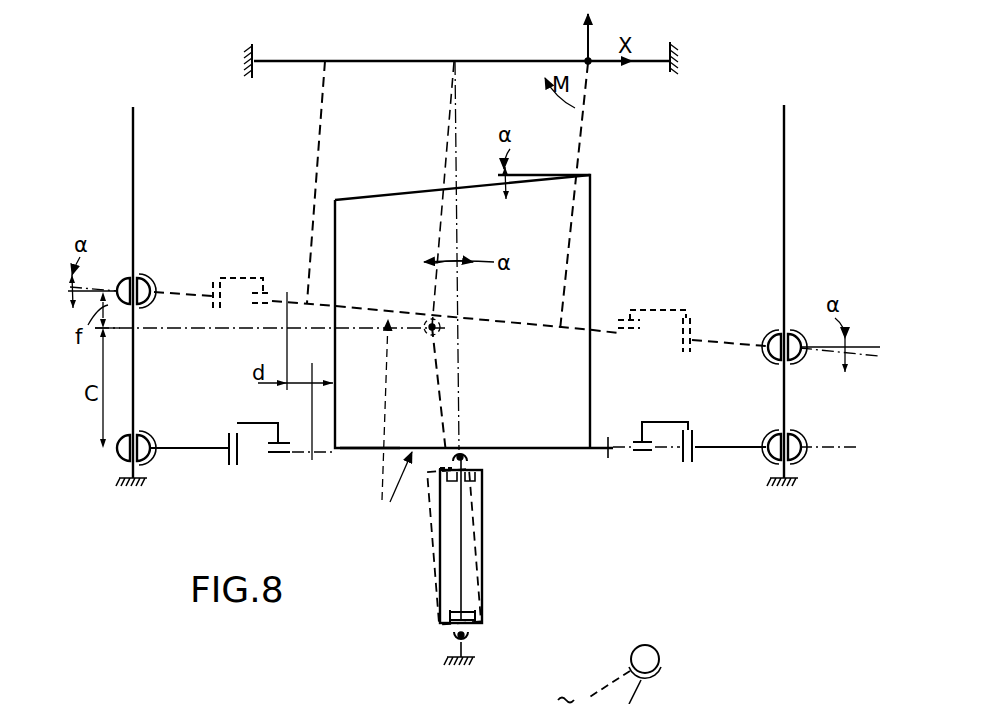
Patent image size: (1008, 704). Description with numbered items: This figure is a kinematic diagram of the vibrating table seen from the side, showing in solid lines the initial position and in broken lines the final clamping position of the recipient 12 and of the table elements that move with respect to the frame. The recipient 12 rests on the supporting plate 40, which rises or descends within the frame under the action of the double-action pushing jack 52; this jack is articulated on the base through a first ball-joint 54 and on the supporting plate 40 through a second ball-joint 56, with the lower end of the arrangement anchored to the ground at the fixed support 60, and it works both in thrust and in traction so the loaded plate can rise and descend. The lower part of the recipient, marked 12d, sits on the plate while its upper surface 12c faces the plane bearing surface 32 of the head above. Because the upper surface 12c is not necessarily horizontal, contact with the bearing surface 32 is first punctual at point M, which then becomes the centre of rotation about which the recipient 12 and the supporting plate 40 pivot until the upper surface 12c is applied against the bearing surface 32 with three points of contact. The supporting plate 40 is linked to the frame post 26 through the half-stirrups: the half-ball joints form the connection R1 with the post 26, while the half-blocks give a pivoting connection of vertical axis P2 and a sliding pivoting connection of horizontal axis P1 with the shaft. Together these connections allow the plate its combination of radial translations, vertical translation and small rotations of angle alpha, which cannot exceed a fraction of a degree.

The recipient 12 is at (476, 322).
The upper surface of the recipient 12c is at (375, 196).
The lower surface of body 12d is at (364, 456).
The post 26 is at (135, 183).
The plane bearing surface 32 is at (314, 61).
The supporting plate 40 is at (389, 426).
The double-action pushing jack 52 is at (445, 578).
The first ball-joint 54 is at (470, 457).
The second ball-joint 56 is at (452, 639).
The ground anchor 60 is at (476, 670).
The sliding pivoting connection of horizontal axis P1 is at (636, 457).
The pivoting connection of vertical axis P2 is at (694, 465).
The connection between half-stirrups and post R1 is at (802, 457).